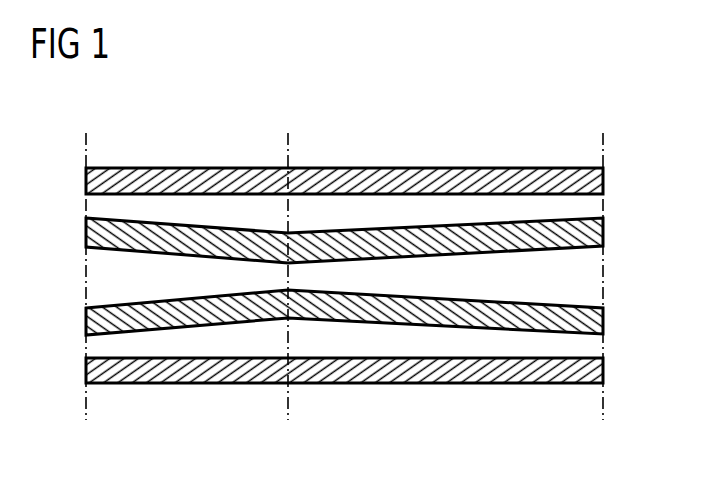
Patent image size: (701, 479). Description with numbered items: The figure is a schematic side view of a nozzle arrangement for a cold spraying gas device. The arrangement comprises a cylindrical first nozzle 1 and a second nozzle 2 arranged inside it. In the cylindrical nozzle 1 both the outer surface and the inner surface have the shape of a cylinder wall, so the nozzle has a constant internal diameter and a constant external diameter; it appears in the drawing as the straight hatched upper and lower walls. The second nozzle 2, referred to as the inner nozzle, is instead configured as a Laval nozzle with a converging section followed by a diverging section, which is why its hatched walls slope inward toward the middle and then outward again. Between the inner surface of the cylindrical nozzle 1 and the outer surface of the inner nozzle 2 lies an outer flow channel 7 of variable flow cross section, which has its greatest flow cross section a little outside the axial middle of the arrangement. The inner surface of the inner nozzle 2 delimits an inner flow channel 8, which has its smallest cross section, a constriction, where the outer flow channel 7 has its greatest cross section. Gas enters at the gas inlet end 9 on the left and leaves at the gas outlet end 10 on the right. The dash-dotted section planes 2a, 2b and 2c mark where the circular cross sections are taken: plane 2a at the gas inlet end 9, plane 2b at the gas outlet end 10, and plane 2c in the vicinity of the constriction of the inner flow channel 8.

The cylindrical first nozzle 1 is at (395, 168).
The second nozzle 2 is at (447, 225).
The section plane at gas inlet end 2a is at (86, 281).
The section plane at gas outlet end 2b is at (603, 280).
The section plane near constriction 2c is at (288, 281).
The outer flow channel 7 is at (401, 345).
The inner flow channel 8 is at (483, 285).
The gas inlet end 9 is at (90, 276).
The gas outlet end 10 is at (594, 269).